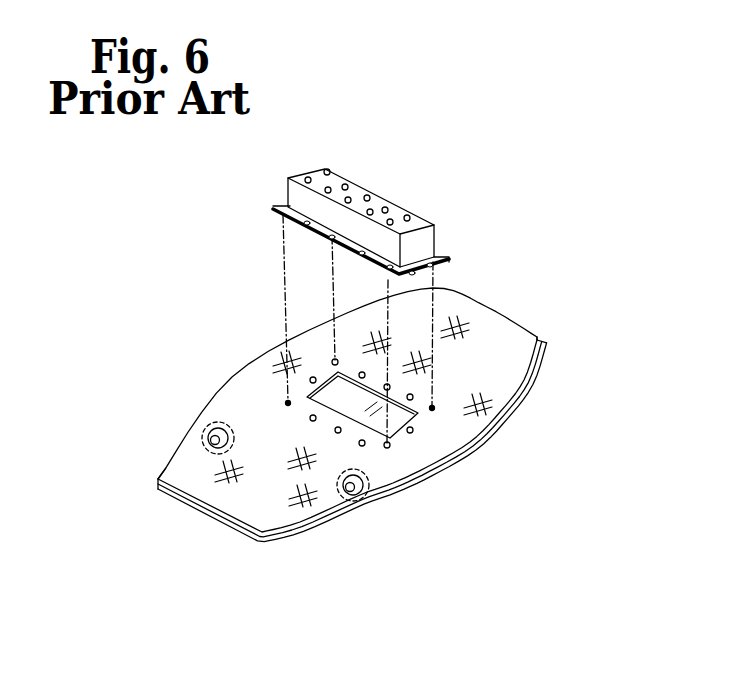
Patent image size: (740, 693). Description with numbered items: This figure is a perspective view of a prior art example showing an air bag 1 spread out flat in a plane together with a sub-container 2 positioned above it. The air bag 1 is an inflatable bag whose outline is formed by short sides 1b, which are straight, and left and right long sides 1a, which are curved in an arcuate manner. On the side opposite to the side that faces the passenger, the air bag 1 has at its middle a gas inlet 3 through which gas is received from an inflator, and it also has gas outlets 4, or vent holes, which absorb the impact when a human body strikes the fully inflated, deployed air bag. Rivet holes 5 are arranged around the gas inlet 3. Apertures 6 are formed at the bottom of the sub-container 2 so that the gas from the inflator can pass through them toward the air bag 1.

The air bag 1 is at (423, 487).
The long sides 1a is at (232, 377).
The short sides 1b is at (488, 308).
The sub-container 2 is at (422, 208).
The gas inlet 3 is at (335, 407).
The gas outlets 4 is at (205, 432).
The rivet holes 5 is at (433, 408).
The apertures 6 is at (367, 190).